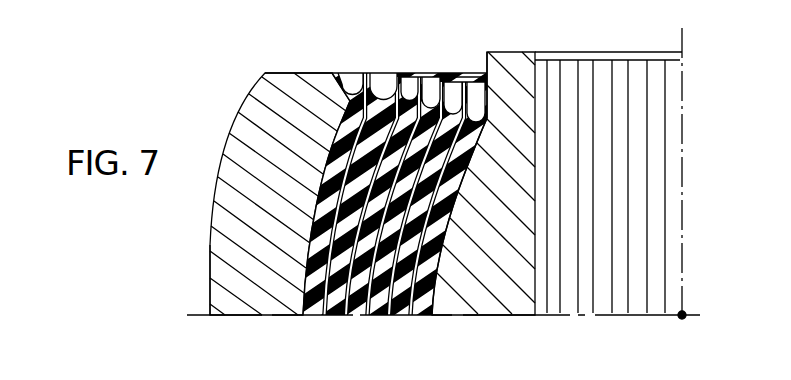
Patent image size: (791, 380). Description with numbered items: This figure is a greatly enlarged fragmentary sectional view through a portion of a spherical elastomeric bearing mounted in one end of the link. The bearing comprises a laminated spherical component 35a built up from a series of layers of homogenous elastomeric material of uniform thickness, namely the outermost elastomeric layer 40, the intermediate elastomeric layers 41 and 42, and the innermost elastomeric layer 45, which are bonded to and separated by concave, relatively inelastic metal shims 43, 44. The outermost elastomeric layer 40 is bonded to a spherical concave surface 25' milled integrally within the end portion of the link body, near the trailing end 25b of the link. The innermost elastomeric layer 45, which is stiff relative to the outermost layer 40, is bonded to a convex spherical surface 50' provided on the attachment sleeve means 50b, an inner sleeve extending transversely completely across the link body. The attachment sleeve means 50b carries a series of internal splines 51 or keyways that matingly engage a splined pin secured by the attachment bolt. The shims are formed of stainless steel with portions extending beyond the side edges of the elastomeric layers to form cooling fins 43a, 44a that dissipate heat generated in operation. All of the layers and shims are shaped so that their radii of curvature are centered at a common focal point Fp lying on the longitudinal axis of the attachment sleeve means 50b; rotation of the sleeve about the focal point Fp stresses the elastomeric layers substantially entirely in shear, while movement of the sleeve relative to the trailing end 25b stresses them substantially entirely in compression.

The housing body 35a is at (236, 83).
The spherical concave surface 25' is at (334, 68).
The cooling fin 43a is at (384, 73).
The cooling fin 44a is at (399, 74).
The trailing end 25b is at (222, 277).
The outermost elastomeric layer 40 is at (316, 313).
The metal shim 43 is at (325, 313).
The elastomeric layer 41 is at (336, 312).
The metal shim 44 is at (355, 308).
The elastomeric layer 42 is at (366, 316).
The innermost elastomeric layer 45 is at (422, 308).
The convex spherical surface 50' is at (461, 201).
The attachment sleeve means 50b is at (506, 248).
The internal splines 51 is at (623, 275).
The focal point Fp is at (686, 316).